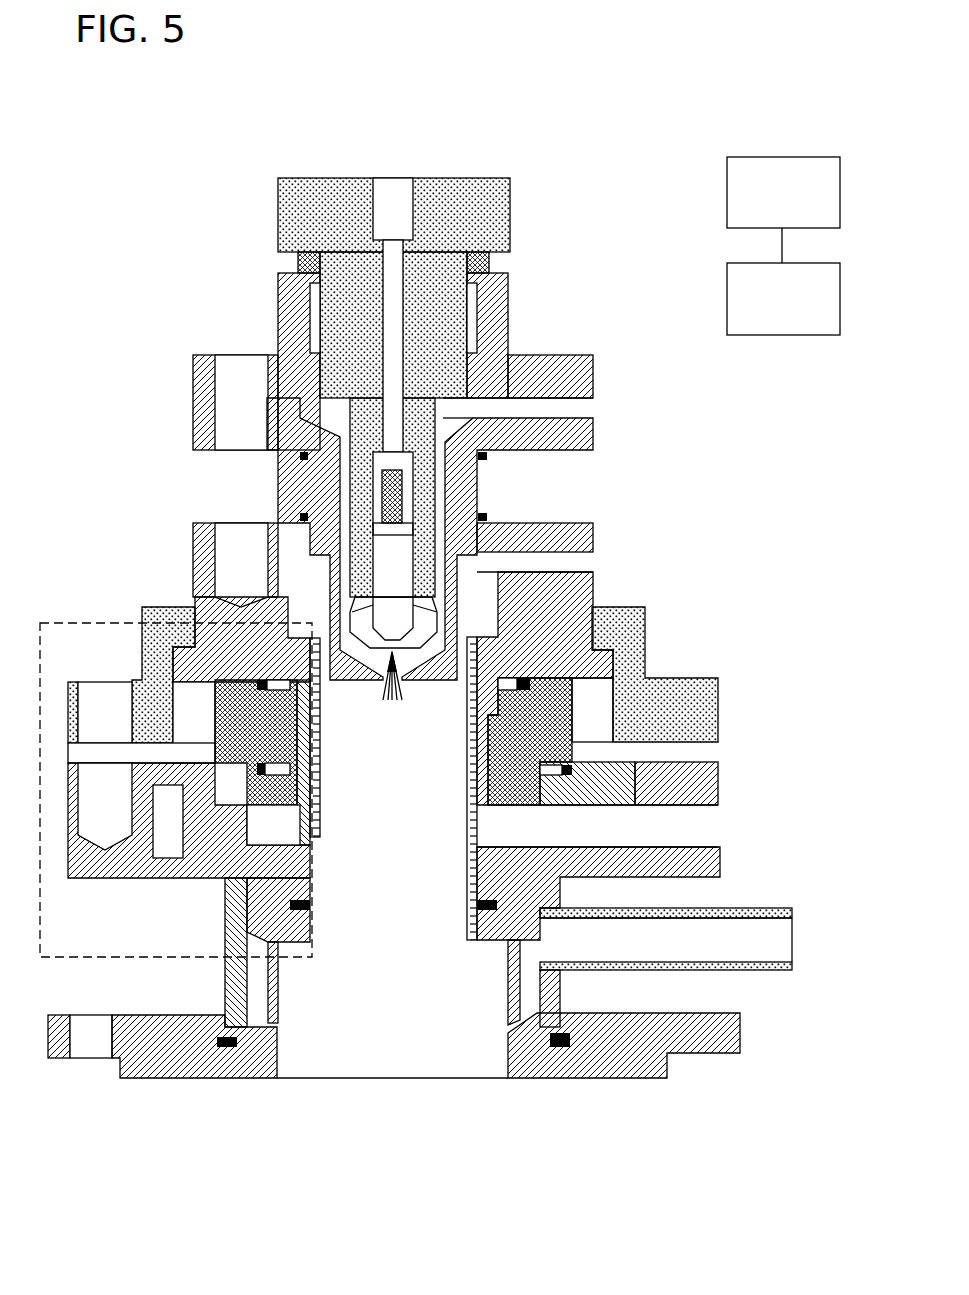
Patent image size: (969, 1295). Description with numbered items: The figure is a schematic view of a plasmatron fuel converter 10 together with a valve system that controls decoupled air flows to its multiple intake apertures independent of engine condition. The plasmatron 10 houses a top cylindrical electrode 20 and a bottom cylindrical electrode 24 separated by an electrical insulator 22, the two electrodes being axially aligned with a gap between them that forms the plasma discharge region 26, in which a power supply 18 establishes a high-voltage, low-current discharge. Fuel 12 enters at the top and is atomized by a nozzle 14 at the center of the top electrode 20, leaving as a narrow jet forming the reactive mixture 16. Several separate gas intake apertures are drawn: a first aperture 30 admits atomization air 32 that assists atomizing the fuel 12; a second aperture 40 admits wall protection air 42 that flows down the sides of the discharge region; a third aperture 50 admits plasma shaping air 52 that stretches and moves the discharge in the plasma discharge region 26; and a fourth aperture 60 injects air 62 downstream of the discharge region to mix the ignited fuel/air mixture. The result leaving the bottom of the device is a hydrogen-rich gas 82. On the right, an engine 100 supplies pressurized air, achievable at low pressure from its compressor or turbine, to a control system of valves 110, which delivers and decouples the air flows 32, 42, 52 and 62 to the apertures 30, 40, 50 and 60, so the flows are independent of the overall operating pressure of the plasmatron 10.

The plasmatron fuel converter 10 is at (672, 123).
The fuel 12 is at (392, 116).
The nozzle 14 is at (393, 615).
The reactive mixture 16 is at (382, 678).
The power supply 18 is at (169, 777).
The top cylindrical electrode 20 is at (390, 688).
The electrical insulator 22 is at (550, 716).
The bottom cylindrical electrode 24 is at (247, 931).
The plasma discharge region 26 is at (395, 820).
The first aperture 30 is at (572, 402).
The atomization air 32 is at (590, 385).
The second aperture 40 is at (572, 562).
The wall protection air 42 is at (622, 464).
The third aperture 50 is at (698, 812).
The plasma shaping air 52 is at (639, 594).
The fourth aperture 60 is at (730, 943).
The downstream mixing air 62 is at (692, 652).
The hydrogen-rich gas 82 is at (397, 1088).
The engine 100 is at (803, 217).
The valve system 110 is at (803, 323).